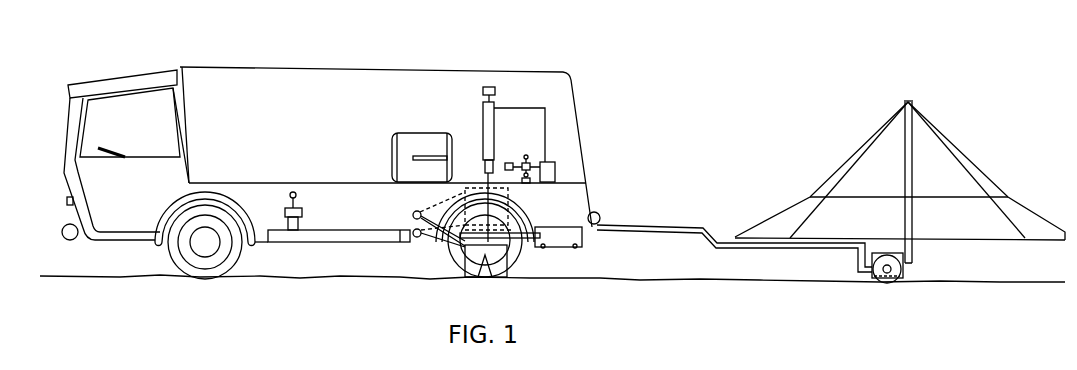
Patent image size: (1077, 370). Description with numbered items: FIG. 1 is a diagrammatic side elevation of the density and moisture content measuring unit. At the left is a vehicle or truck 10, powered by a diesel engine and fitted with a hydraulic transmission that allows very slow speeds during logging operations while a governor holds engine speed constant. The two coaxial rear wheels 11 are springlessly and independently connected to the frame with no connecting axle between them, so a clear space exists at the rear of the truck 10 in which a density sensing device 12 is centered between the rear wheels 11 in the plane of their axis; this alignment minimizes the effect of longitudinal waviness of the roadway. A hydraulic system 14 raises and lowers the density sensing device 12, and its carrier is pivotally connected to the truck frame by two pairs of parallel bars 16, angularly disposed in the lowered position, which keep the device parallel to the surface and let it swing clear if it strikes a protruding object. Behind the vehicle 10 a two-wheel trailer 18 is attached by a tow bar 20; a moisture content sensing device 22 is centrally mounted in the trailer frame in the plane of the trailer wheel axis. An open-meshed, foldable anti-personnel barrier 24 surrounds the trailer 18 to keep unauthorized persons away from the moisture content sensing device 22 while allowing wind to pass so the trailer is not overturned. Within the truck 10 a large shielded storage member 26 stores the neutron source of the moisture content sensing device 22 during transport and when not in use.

The vehicle or truck 10 is at (372, 69).
The rear wheels 11 is at (528, 258).
The density sensing device 12 is at (511, 251).
The hydraulic system 14 is at (497, 138).
The parallel bars 16 is at (432, 243).
The trailer 18 is at (905, 271).
The tow bar 20 is at (667, 232).
The moisture content sensing device 22 is at (896, 249).
The anti-personnel barrier 24 is at (1033, 213).
The shielded storage member 26 is at (420, 131).